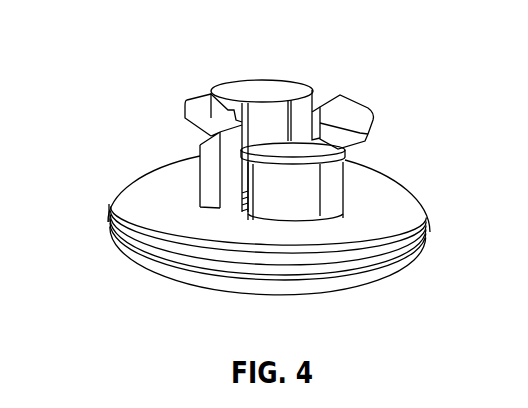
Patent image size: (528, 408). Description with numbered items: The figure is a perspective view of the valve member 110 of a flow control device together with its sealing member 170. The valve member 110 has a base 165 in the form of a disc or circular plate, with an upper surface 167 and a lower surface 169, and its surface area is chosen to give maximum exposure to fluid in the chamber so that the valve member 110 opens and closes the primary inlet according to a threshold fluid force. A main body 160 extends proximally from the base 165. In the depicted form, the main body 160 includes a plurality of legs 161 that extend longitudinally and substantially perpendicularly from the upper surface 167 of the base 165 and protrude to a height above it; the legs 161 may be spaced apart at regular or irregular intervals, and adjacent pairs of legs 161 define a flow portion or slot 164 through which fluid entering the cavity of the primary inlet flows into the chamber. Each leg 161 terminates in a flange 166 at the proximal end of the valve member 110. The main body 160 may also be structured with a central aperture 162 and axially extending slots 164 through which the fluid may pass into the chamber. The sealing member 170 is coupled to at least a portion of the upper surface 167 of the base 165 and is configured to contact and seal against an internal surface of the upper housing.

The valve member 110 is at (172, 53).
The main body 160 is at (388, 135).
The legs 161 is at (207, 153).
The central aperture 162 is at (265, 117).
The slot 164 is at (315, 110).
The base 165 is at (433, 238).
The flange 166 is at (272, 90).
The upper surface 167 is at (118, 207).
The lower surface 169 is at (386, 281).
The sealing member 170 is at (137, 184).